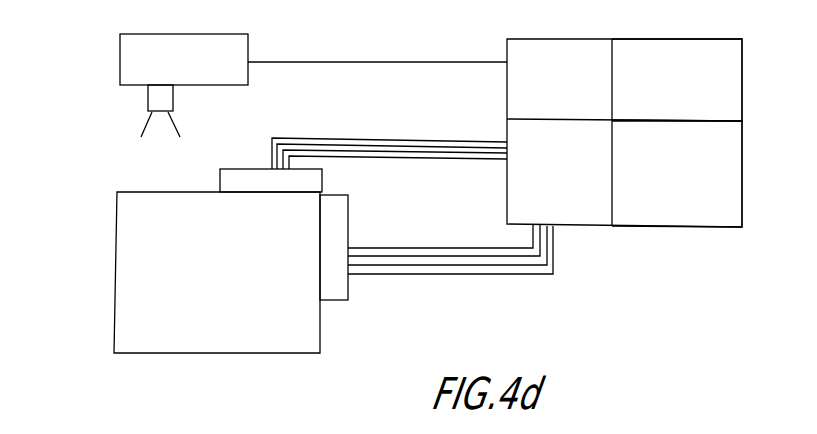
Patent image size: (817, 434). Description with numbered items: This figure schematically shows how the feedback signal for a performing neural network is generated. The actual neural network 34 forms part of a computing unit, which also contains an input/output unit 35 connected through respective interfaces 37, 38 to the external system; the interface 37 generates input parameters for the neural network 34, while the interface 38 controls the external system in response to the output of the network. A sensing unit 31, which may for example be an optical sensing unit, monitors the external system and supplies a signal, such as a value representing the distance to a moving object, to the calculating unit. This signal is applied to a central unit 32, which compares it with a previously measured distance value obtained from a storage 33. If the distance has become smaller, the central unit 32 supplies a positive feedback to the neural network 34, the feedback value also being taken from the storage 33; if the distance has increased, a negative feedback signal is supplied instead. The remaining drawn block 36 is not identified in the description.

The sensing unit 31 is at (232, 97).
The central unit 32 is at (505, 95).
The storage 33 is at (742, 85).
The neural network 34 is at (742, 167).
The input/output unit 35 is at (506, 191).
The main unit 36 is at (320, 340).
The interface 37 is at (240, 168).
The interface 38 is at (348, 222).